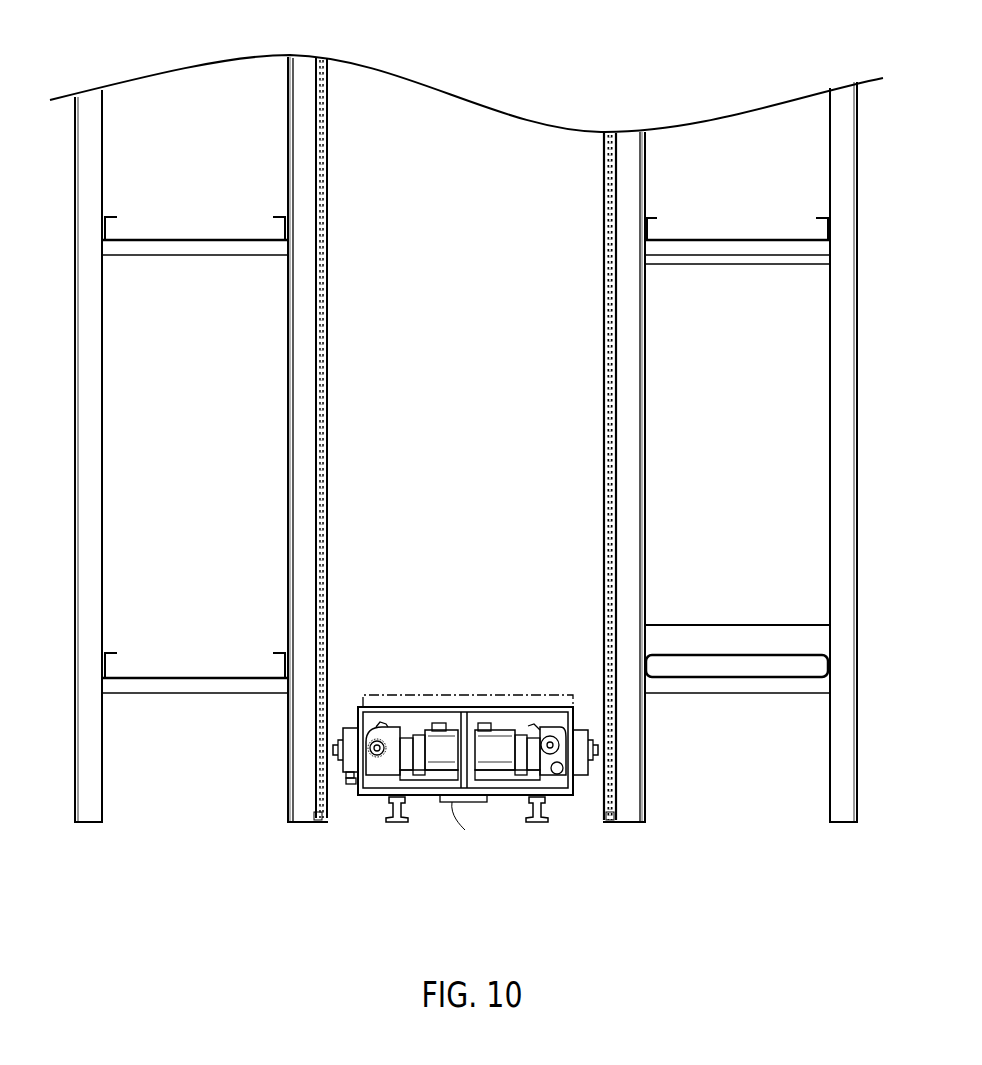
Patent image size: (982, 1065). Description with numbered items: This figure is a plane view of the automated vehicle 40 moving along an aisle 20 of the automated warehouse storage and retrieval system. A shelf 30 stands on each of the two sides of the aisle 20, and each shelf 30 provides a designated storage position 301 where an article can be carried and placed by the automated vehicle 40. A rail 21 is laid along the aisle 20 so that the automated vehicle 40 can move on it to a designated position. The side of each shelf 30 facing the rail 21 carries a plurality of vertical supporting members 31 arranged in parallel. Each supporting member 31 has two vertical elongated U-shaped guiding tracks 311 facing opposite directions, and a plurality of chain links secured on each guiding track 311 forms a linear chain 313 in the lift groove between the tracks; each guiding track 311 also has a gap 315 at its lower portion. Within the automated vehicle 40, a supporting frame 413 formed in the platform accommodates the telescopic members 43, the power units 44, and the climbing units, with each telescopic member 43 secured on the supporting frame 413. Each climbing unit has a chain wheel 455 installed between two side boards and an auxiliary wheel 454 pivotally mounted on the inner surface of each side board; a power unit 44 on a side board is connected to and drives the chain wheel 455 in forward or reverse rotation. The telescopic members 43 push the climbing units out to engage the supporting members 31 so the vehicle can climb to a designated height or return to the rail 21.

The aisle 20 is at (477, 489).
The rail 21 is at (397, 820).
The shelf 30 is at (72, 774).
The storage position 301 is at (127, 93).
The supporting member 31 is at (330, 540).
The guiding track 311 is at (320, 327).
The linear chain 313 is at (317, 407).
The gap 315 is at (315, 768).
The automated vehicle 40 is at (458, 754).
The supporting frame 413 is at (345, 832).
The telescopic member 43 is at (487, 798).
The power unit 44 is at (420, 750).
The auxiliary wheel 454 is at (340, 730).
The chain wheel 455 is at (372, 718).